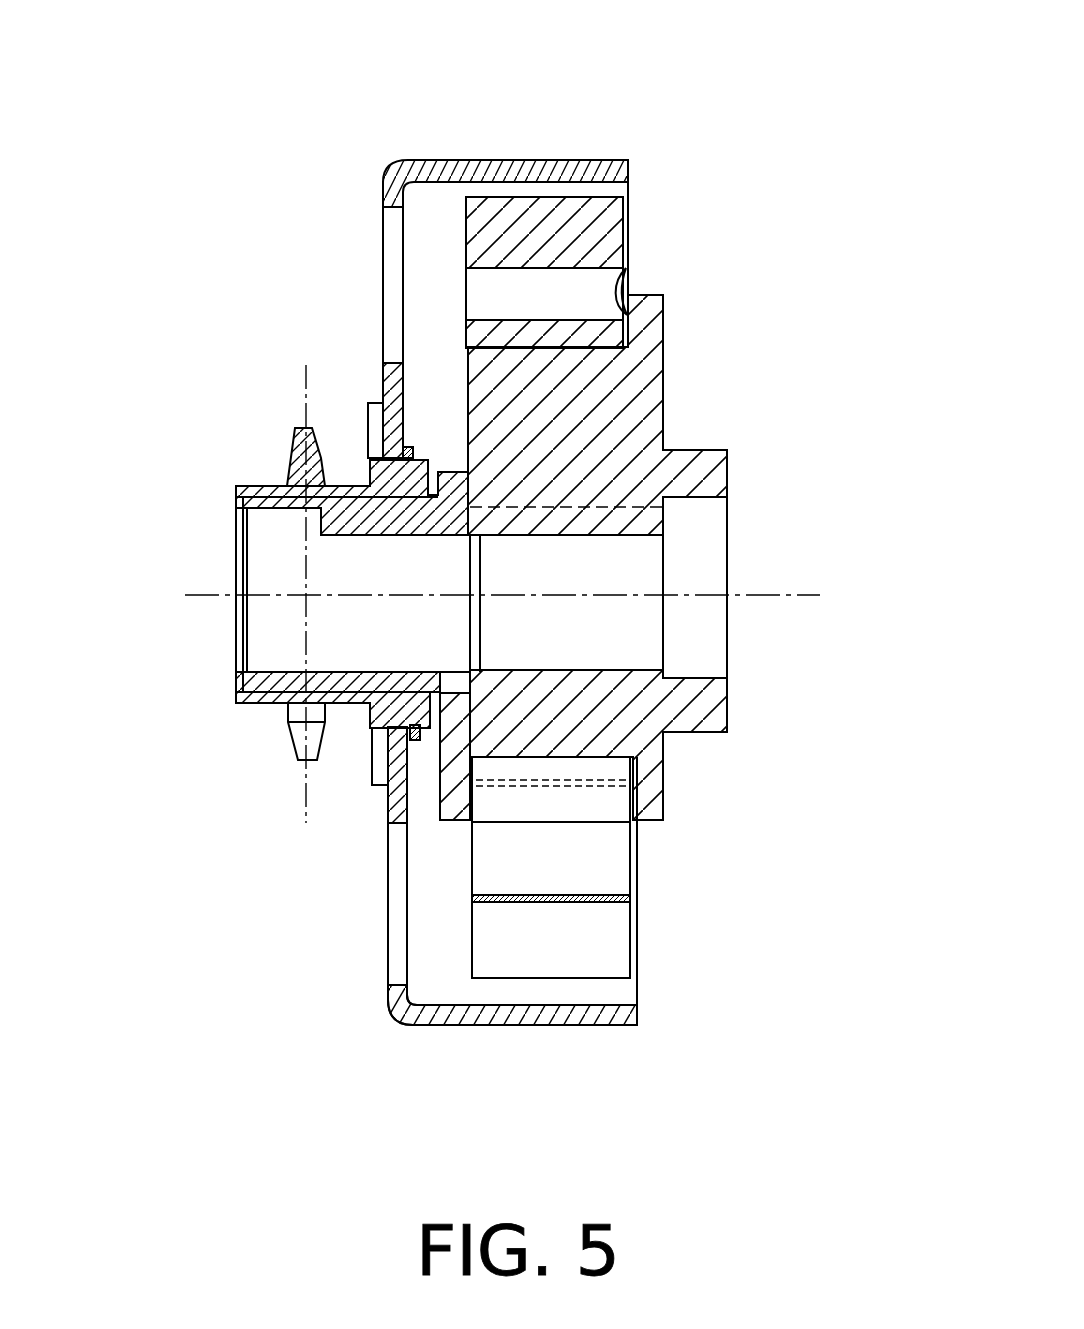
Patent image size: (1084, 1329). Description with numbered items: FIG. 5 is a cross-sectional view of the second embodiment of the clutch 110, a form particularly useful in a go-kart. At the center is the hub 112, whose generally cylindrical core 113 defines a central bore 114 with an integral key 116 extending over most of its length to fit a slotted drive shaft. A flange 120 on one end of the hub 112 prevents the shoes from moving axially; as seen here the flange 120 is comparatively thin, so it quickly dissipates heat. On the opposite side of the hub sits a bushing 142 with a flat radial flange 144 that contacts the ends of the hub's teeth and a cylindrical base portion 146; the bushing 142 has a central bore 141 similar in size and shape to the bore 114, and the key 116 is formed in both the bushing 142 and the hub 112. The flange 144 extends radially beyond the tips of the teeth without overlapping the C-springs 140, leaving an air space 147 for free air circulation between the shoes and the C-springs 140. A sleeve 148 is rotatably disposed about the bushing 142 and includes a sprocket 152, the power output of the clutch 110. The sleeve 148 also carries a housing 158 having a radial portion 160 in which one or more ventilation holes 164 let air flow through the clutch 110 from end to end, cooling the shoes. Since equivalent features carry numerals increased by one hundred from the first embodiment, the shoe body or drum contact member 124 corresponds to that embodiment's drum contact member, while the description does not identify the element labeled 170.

The clutch 110 is at (672, 1056).
The hub 112 is at (722, 708).
The cylindrical core 113 is at (563, 715).
The central bore 114 is at (608, 670).
The key 116 is at (360, 540).
The flange 120 is at (630, 428).
The bearing 124 is at (567, 230).
The C-springs 140 is at (542, 902).
The central bore 141 is at (295, 670).
The bushing 142 is at (267, 493).
The radial flange 144 is at (428, 787).
The cylindrical base portion 146 is at (238, 680).
The air space 147 is at (437, 225).
The sleeve 148 is at (283, 705).
The sprocket 152 is at (293, 452).
The housing 158 is at (472, 158).
The radial portion 160 is at (383, 197).
The ventilation holes 164 is at (397, 908).
The seal 170 is at (627, 268).